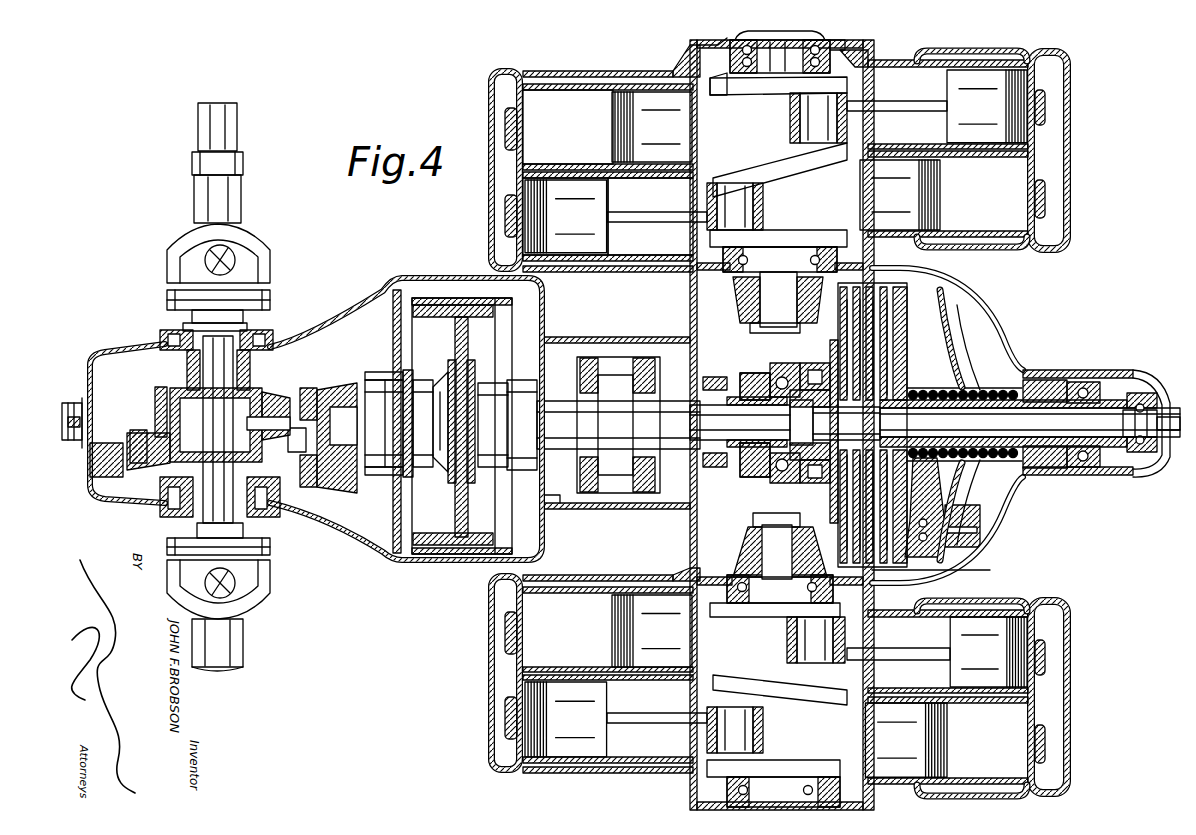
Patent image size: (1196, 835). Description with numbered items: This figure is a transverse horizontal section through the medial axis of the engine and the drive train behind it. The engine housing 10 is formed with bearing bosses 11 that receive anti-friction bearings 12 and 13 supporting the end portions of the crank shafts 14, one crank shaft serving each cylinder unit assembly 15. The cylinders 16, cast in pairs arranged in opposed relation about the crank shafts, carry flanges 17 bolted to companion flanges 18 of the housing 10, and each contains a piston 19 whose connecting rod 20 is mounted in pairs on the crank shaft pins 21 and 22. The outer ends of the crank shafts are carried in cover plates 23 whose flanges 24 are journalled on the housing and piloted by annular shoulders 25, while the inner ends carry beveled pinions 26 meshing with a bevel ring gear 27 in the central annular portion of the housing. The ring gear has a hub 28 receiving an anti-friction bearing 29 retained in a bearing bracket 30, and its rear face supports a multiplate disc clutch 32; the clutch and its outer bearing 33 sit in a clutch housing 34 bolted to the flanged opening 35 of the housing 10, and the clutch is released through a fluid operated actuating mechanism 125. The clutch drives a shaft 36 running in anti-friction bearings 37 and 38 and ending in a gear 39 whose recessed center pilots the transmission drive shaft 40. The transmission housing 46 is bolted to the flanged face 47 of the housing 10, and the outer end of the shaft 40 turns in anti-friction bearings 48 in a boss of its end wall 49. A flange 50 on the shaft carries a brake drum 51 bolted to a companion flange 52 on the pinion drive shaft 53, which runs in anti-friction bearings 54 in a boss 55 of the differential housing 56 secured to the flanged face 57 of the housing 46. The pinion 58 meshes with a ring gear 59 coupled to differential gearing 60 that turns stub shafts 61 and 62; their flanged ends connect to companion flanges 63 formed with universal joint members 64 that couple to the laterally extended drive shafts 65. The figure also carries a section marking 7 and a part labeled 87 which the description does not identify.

The section line 7 is at (772, 513).
The housing 10 is at (875, 253).
The bearing bosses 11 is at (731, 311).
The anti-friction bearing 12 is at (740, 300).
The anti-friction bearing 13 is at (838, 46).
The crank shaft 14 is at (792, 240).
The cylinder unit assembly 15 is at (901, 80).
The cylinder 16 is at (637, 73).
The flange 17 is at (687, 73).
The companion flange 18 is at (680, 267).
The piston 19 is at (590, 790).
The connecting rod 20 is at (907, 103).
The crank shaft pin 21 is at (772, 200).
The crank shaft pin 22 is at (818, 132).
The cover plate 23 is at (712, 44).
The flange 24 is at (857, 50).
The annular shoulder 25 is at (718, 68).
The beveled pinion 26 is at (766, 330).
The bevel ring gear 27 is at (830, 526).
The hub 28 is at (812, 364).
The anti-friction bearing 29 is at (795, 484).
The bearing bracket 30 is at (790, 369).
The multiplate disc clutch 32 is at (942, 283).
The outer bearing 33 is at (1062, 372).
The housing 34 is at (1002, 336).
The flanged opening 35 is at (878, 588).
The shaft 36 is at (1106, 445).
The anti-friction bearing 37 is at (1146, 458).
The anti-friction bearing 38 is at (768, 376).
The gear 39 is at (742, 466).
The transmission drive shaft 40 is at (560, 405).
The housing 46 is at (606, 510).
The flanged face 47 is at (690, 540).
The anti-friction bearing 48 is at (522, 442).
The end wall 49 is at (542, 485).
The flange 50 is at (472, 372).
The brake drum 51 is at (455, 336).
The companion flange 52 is at (450, 372).
The pinion drive shaft 53 is at (362, 450).
The anti-friction bearing 54 is at (366, 393).
The boss 55 is at (372, 375).
The differential housing 56 is at (404, 281).
The flanged face 57 is at (490, 286).
The pinion 58 is at (327, 398).
The ring gear 59 is at (100, 490).
The differential gearing 60 is at (178, 384).
The stub shaft 61 is at (242, 333).
The stub shaft 62 is at (210, 519).
The companion flange 63 is at (270, 292).
The universal joint member 64 is at (237, 262).
The drive shaft 65 is at (226, 646).
The cover 87 is at (490, 100).
The fluid operated actuating mechanism 125 is at (926, 510).